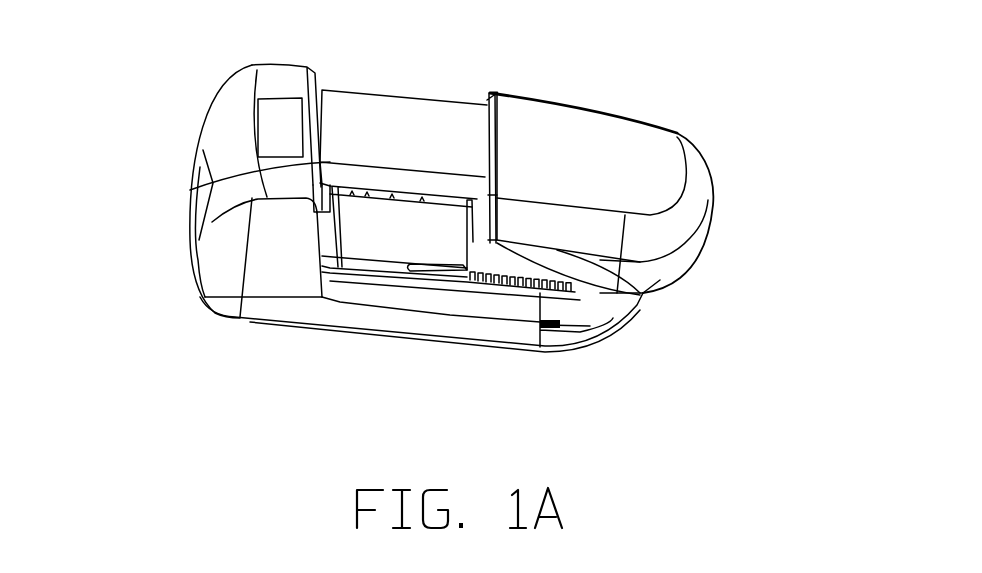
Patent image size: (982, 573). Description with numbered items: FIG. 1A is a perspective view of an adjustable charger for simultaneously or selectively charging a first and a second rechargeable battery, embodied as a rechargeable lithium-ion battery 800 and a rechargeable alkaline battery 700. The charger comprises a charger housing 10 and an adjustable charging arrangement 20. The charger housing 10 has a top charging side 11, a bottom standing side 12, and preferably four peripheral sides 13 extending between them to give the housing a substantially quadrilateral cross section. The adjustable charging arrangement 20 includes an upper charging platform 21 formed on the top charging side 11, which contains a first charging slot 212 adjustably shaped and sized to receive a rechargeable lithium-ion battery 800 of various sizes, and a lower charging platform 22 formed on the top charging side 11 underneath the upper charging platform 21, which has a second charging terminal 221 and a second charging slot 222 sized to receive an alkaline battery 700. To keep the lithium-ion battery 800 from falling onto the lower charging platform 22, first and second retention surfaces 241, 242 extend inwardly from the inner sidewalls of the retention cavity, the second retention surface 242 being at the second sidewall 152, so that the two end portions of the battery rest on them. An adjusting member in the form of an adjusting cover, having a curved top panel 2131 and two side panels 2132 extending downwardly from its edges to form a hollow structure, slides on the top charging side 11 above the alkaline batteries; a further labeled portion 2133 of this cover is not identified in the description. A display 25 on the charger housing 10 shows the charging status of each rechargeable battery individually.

The charger housing 10 is at (513, 333).
The top charging side 11 is at (413, 63).
The bottom standing side 12 is at (440, 372).
The peripheral side 13 is at (435, 303).
The adjustable charging arrangement 20 is at (644, 220).
The upper charging platform 21 is at (480, 213).
The lower charging platform 22 is at (348, 267).
The display 25 is at (258, 133).
The second sidewall 152 is at (491, 195).
The first charging slot 212 is at (333, 233).
The second charging terminal 221 is at (258, 162).
The second charging slot 222 is at (392, 237).
The first retention surface 241 is at (333, 195).
The second retention surface 242 is at (481, 232).
The rechargeable alkaline battery 700 is at (401, 269).
The rechargeable lithium-ion battery 800 is at (465, 117).
The curved top panel 2131 is at (645, 142).
The side panels 2132 is at (605, 243).
The end cap 2133 is at (483, 198).